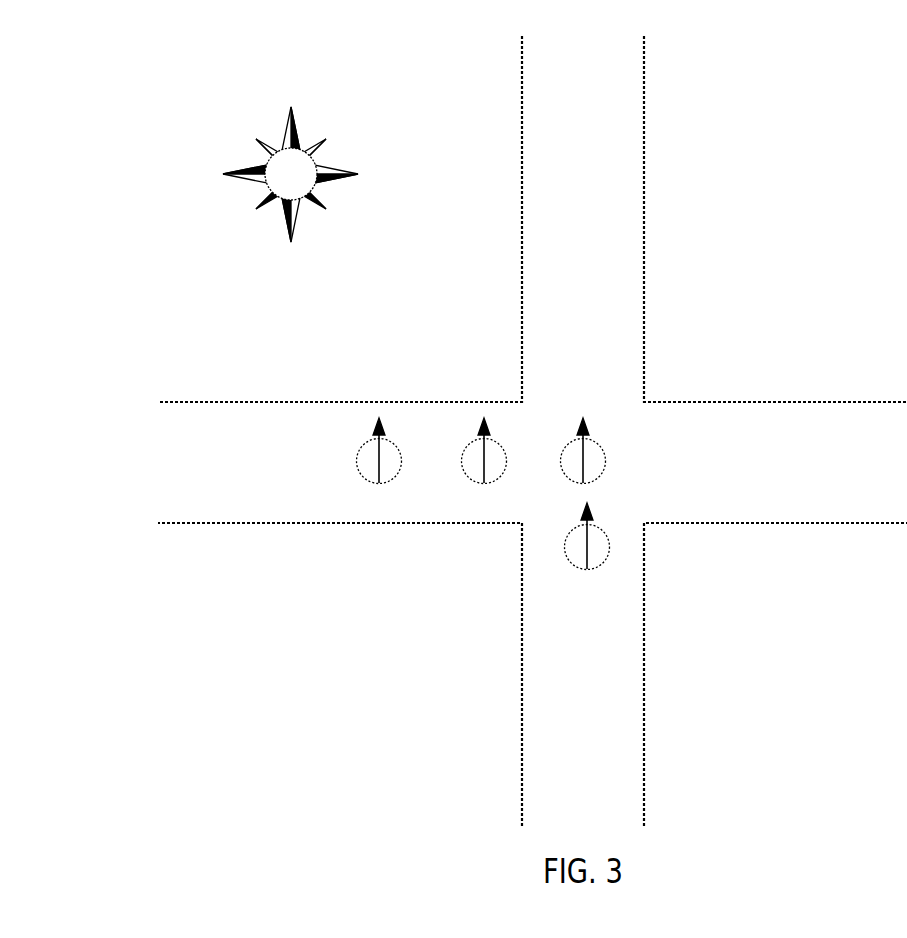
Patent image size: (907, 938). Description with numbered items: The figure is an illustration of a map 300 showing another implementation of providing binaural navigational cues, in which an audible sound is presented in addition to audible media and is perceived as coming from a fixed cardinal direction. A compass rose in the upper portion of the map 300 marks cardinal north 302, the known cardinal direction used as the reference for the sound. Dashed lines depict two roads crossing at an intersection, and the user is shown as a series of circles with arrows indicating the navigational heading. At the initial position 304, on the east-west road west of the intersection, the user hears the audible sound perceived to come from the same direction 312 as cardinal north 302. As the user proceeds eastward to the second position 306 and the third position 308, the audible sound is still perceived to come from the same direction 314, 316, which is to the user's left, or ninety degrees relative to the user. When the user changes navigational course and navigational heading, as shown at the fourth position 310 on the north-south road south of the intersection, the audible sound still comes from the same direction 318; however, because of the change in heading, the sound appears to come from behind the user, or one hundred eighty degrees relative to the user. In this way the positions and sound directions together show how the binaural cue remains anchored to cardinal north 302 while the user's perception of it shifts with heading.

The map 300 is at (106, 148).
The cardinal north 302 is at (304, 80).
The initial position 304 is at (390, 438).
The second position 306 is at (497, 438).
The third position 308 is at (595, 438).
The fourth position 310 is at (603, 531).
The direction of the audible sound at the initial position 312 is at (380, 432).
The direction of the audible sound at the second position 314 is at (484, 481).
The direction of the audible sound at the third position 316 is at (583, 432).
The direction of the audible sound at the fourth position 318 is at (588, 517).